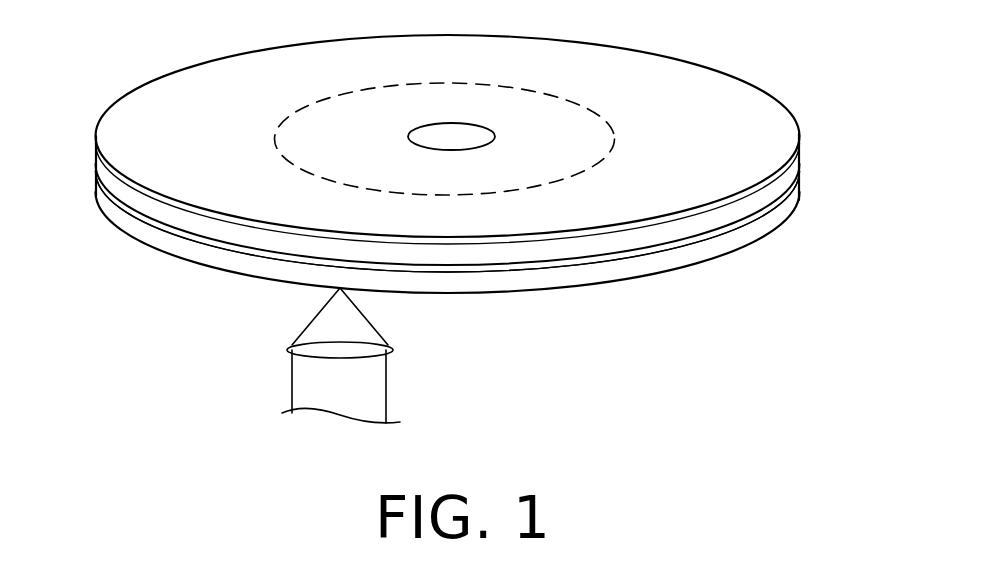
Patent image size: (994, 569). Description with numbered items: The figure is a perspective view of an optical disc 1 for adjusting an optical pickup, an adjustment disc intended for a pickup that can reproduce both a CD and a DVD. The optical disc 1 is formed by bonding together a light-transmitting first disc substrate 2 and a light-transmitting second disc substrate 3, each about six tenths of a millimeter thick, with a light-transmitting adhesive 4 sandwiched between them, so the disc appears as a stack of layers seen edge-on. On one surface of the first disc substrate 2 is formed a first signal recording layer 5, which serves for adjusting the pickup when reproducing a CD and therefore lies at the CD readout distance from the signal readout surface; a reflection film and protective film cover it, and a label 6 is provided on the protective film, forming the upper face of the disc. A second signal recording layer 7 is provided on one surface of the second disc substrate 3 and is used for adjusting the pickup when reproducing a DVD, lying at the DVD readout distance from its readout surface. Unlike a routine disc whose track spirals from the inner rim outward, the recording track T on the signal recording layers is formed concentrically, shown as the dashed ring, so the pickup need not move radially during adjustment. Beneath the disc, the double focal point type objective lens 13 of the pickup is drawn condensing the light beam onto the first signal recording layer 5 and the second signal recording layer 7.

The optical disc for adjusting the optical pickup 1 is at (448, 146).
The first disc substrate 2 is at (800, 173).
The second disc substrate 3 is at (790, 217).
The light-transmitting adhesive 4 is at (800, 192).
The first signal recording layer 5 is at (122, 180).
The label 6 is at (165, 88).
The second signal recording layer 7 is at (147, 220).
The recording track T is at (593, 113).
The objective lens 13 is at (370, 350).